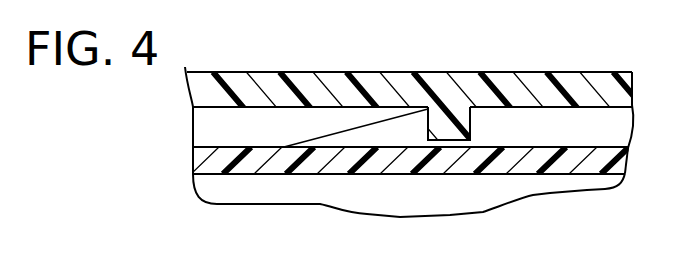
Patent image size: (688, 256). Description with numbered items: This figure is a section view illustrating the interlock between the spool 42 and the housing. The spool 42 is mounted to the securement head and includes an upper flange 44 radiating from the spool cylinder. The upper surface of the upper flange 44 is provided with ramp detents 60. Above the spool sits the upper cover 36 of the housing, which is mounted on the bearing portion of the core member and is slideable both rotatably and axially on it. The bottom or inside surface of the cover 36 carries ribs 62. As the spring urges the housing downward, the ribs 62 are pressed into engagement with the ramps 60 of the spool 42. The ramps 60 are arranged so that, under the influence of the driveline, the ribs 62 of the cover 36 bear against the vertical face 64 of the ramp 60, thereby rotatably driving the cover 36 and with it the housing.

The upper cover 36 is at (205, 90).
The upper flange 44 is at (226, 146).
The spool 42 is at (176, 170).
The ramp detent 60 is at (401, 126).
The rib 62 is at (478, 119).
The vertical face 64 is at (436, 126).